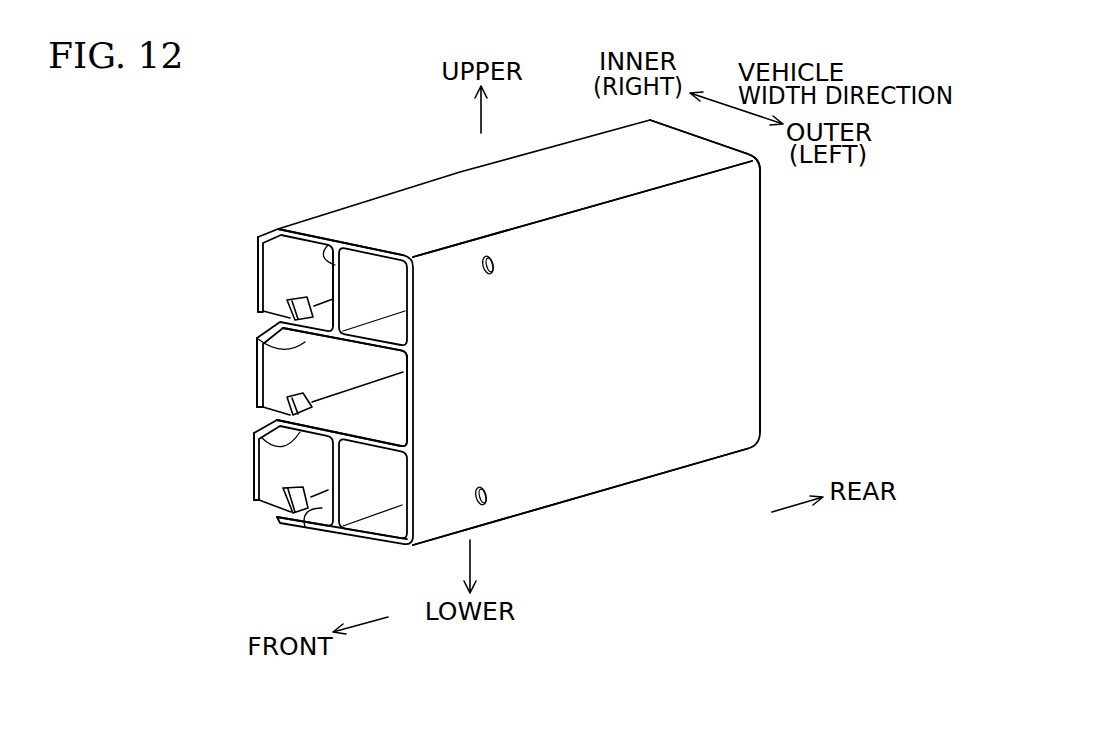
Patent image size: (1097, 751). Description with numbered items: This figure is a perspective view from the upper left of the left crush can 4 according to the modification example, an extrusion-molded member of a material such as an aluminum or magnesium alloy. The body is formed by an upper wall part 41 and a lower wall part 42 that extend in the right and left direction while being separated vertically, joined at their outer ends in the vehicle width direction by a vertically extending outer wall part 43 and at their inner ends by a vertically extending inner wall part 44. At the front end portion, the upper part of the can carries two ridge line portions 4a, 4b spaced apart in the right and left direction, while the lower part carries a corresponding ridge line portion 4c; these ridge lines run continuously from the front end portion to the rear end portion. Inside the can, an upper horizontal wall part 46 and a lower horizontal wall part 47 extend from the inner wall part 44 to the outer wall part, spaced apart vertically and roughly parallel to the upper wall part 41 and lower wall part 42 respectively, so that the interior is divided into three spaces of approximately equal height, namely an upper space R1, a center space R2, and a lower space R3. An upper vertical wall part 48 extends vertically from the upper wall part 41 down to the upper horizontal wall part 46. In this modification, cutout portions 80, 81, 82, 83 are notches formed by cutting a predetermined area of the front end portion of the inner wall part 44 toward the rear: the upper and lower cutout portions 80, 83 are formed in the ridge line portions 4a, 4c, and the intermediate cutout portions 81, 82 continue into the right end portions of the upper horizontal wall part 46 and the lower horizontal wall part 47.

The left crush can 4 is at (579, 126).
The ridge line portion 4a is at (710, 175).
The ridge line portion 4b is at (537, 148).
The ridge line portion 4c is at (592, 493).
The upper wall part 41 is at (443, 197).
The lower wall part 42 is at (364, 541).
The outer wall part 43 is at (730, 320).
The inner wall part 44 is at (254, 364).
The upper horizontal wall part 46 is at (278, 338).
The lower horizontal wall part 47 is at (262, 437).
The upper vertical wall part 48 is at (328, 245).
The cutout portion 80 is at (278, 228).
The cutout portion 81 is at (285, 300).
The cutout portion 82 is at (287, 395).
The cutout portion 83 is at (283, 490).
The upper space R1 is at (353, 304).
The center space R2 is at (323, 382).
The lower space R3 is at (346, 499).